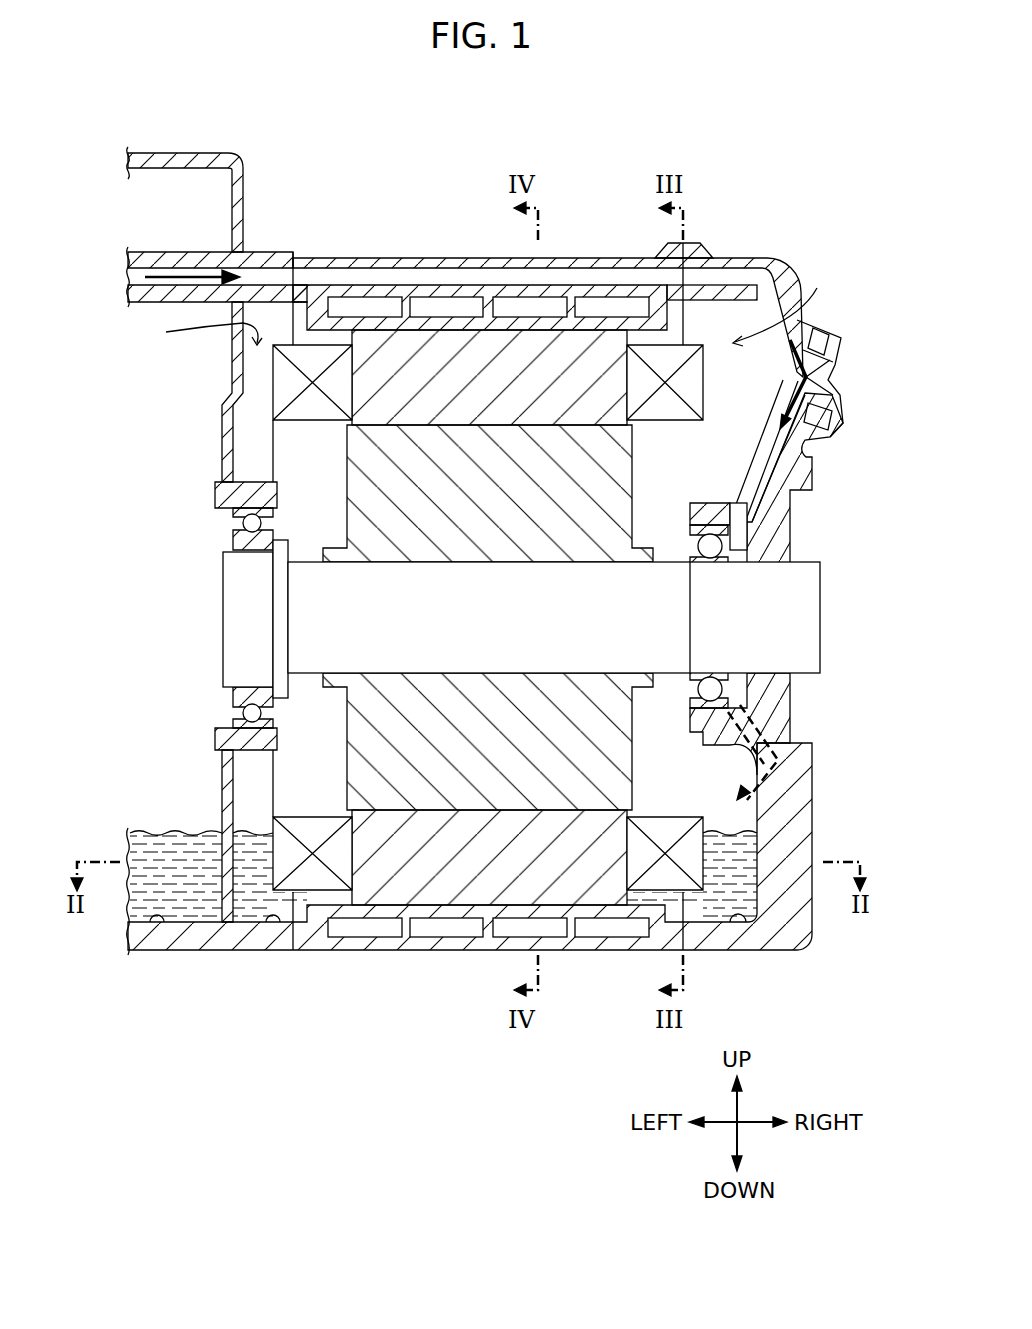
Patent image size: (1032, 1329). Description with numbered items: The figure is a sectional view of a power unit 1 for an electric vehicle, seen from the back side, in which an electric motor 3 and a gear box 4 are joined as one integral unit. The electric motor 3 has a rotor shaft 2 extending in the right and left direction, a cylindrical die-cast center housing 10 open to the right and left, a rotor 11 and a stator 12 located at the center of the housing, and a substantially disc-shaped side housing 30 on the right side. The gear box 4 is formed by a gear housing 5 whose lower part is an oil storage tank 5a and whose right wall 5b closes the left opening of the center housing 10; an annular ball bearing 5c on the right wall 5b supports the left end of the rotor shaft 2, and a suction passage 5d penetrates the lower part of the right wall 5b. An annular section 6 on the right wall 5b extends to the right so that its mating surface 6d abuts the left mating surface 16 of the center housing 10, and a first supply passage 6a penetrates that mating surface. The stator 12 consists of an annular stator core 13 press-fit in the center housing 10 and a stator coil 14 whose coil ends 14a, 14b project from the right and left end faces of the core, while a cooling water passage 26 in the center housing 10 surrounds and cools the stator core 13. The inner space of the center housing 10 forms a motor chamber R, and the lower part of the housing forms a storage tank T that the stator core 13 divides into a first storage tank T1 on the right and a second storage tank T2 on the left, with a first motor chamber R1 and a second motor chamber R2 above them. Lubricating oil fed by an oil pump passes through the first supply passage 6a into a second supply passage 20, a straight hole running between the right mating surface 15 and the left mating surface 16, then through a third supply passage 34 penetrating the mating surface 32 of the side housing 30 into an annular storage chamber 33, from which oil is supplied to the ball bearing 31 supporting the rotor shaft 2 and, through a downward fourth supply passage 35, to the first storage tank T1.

The power unit 1 is at (556, 131).
The rotor shaft 2 is at (240, 600).
The electric motor 3 is at (557, 254).
The gear box 4 is at (131, 152).
The gear housing 5 is at (191, 154).
The oil storage tank 5a is at (160, 912).
The right wall 5b is at (232, 350).
The ball bearing 5c is at (233, 543).
The suction passage 5d is at (228, 858).
The annular section 6 is at (257, 262).
The first supply passage 6a is at (247, 271).
The mating surface 6d is at (300, 281).
The center housing 10 is at (434, 262).
The rotor 11 is at (352, 470).
The stator 12 is at (465, 1005).
The stator core 13 is at (440, 890).
The stator coil 14 is at (195, 581).
The coil end 14a is at (688, 798).
The coil end 14b is at (273, 770).
The right mating surface 15 is at (697, 272).
The left mating surface 16 is at (292, 274).
The second supply passage 20 is at (370, 297).
The cooling water passage 26 is at (600, 938).
The side housing 30 is at (769, 261).
The ball bearing 31 is at (768, 530).
The mating surface 32 is at (673, 262).
The storage chamber 33 is at (745, 512).
The third supply passage 34 is at (808, 330).
The fourth supply passage 35 is at (760, 716).
The motor chamber R is at (837, 273).
The first motor chamber R1 is at (800, 345).
The second motor chamber R2 is at (184, 331).
The storage tank T is at (781, 1005).
The first storage tank T1 is at (760, 925).
The second storage tank T2 is at (292, 925).